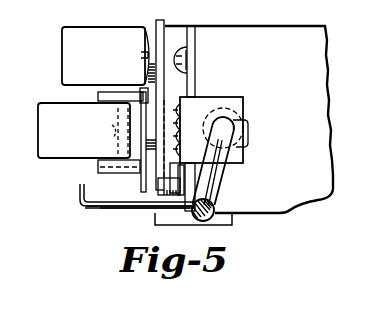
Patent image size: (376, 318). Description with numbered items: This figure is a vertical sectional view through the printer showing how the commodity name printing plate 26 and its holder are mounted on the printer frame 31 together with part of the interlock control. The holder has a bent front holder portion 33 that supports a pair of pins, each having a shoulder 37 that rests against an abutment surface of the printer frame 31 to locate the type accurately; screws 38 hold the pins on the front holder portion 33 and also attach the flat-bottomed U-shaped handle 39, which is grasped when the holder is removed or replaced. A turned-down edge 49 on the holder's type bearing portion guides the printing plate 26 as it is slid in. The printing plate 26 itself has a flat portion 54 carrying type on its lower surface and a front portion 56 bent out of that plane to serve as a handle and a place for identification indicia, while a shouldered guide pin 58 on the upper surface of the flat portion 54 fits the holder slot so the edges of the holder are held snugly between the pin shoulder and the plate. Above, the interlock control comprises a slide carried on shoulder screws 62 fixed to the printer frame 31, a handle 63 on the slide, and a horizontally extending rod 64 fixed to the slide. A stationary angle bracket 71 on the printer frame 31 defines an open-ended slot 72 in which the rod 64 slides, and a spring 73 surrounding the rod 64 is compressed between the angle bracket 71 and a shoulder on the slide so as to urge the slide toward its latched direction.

The commodity name printing plate 26 is at (86, 213).
The printer frame 31 is at (249, 119).
The front holder portion 33 is at (140, 206).
The shoulder 37 is at (147, 123).
The screw 38 is at (116, 141).
The handle 39 is at (52, 152).
The turned-down edge 49 is at (233, 216).
The flat portion 54 is at (132, 211).
The front portion 56 is at (78, 192).
The shouldered guide pin 58 is at (166, 188).
The shoulder screw 62 is at (156, 35).
The handle 63 is at (76, 34).
The rod 64 is at (213, 204).
The angle bracket 71 is at (179, 131).
The open-ended slot 72 is at (247, 132).
The spring 73 is at (222, 108).